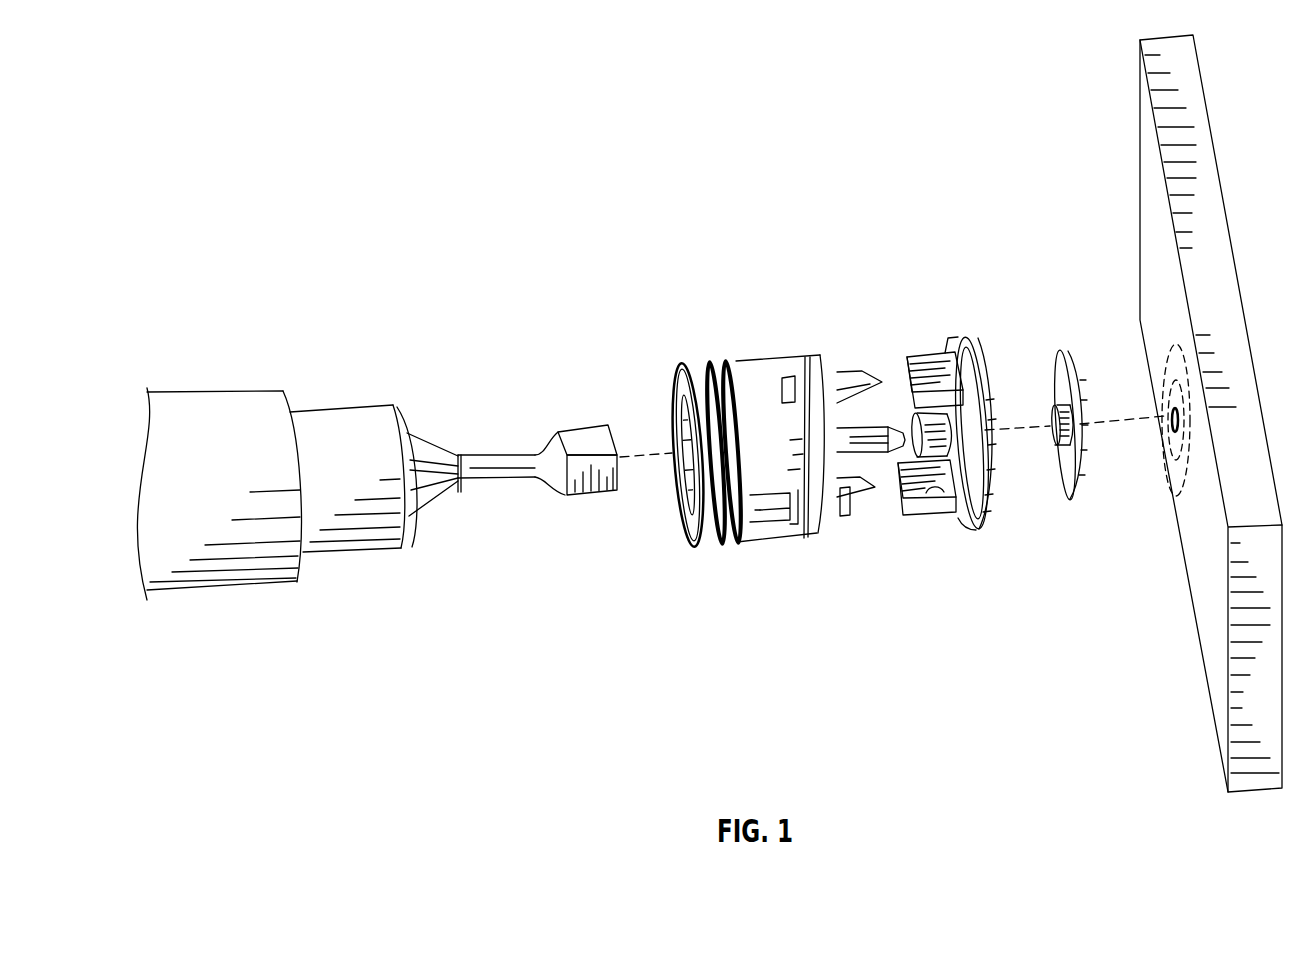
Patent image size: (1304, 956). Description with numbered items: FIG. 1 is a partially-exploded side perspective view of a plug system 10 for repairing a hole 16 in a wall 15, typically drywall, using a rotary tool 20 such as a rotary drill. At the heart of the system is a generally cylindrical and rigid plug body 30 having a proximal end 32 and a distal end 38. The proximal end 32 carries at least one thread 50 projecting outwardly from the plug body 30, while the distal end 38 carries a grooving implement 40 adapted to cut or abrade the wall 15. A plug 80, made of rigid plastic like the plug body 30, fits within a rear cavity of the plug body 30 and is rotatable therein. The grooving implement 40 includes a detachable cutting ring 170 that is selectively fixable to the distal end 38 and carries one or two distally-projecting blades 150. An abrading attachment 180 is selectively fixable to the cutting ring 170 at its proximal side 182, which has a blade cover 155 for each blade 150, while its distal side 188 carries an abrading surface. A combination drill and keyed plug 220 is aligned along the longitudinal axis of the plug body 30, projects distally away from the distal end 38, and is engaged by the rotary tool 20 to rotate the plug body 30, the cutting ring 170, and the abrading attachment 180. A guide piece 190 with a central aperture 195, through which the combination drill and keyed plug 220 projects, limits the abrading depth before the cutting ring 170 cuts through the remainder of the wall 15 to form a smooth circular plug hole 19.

The plug system 10 is at (637, 213).
The wall 15 is at (1195, 413).
The hole 16 is at (1170, 428).
The circular plug hole 19 is at (1172, 470).
The rotary tool 20 is at (243, 403).
The plug body 30 is at (800, 398).
The proximal end 32 is at (683, 362).
The distal end 38 is at (786, 362).
The grooving implement 40 is at (965, 253).
The thread 50 is at (704, 360).
The plug 80 is at (675, 362).
The distally-projecting blade 150 is at (873, 378).
The blade cover 155 is at (923, 357).
The detachable cutting ring 170 is at (803, 362).
The abrading attachment 180 is at (1005, 434).
The proximal side 182 is at (959, 519).
The distal side 188 is at (985, 352).
The guide piece 190 is at (1070, 366).
The central aperture 195 is at (1055, 436).
The combination drill and keyed plug 220 is at (886, 446).